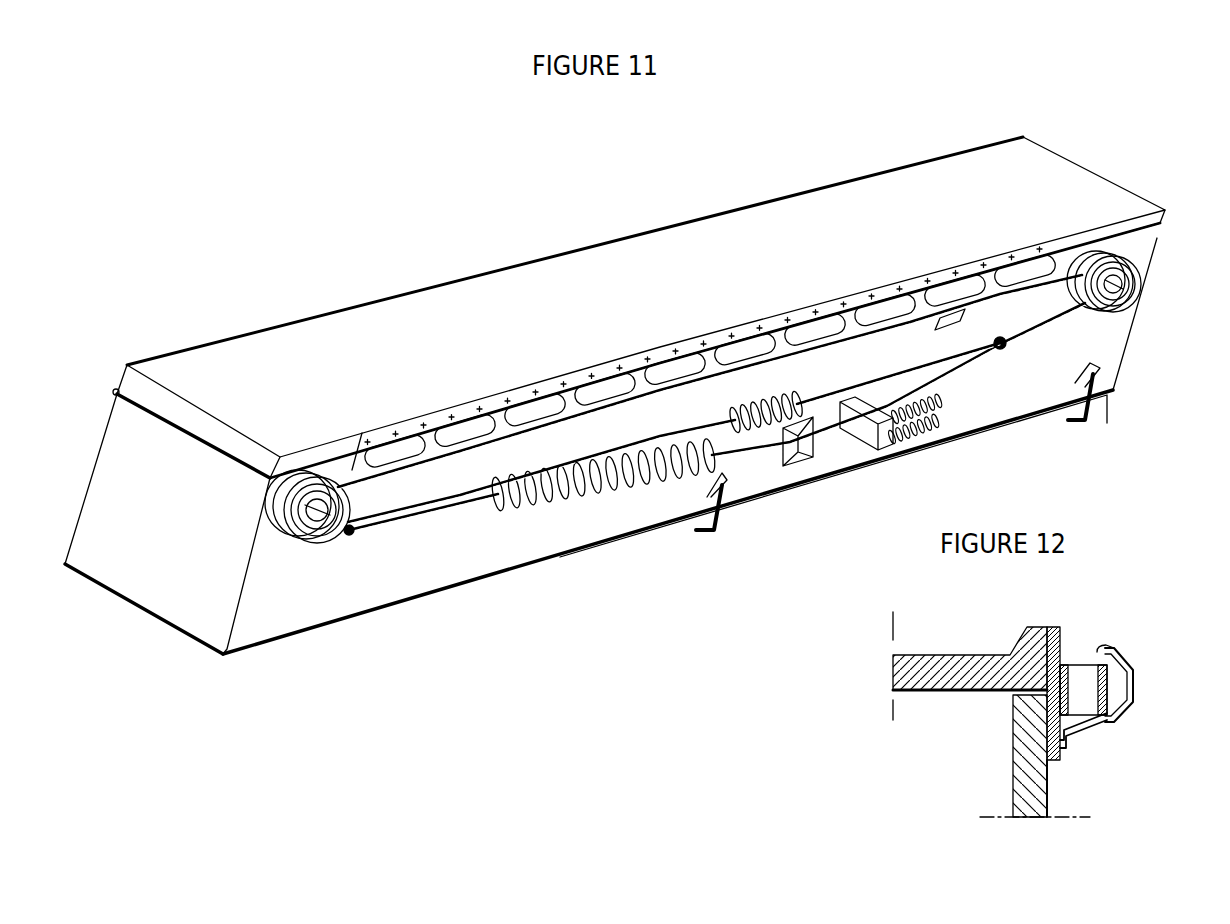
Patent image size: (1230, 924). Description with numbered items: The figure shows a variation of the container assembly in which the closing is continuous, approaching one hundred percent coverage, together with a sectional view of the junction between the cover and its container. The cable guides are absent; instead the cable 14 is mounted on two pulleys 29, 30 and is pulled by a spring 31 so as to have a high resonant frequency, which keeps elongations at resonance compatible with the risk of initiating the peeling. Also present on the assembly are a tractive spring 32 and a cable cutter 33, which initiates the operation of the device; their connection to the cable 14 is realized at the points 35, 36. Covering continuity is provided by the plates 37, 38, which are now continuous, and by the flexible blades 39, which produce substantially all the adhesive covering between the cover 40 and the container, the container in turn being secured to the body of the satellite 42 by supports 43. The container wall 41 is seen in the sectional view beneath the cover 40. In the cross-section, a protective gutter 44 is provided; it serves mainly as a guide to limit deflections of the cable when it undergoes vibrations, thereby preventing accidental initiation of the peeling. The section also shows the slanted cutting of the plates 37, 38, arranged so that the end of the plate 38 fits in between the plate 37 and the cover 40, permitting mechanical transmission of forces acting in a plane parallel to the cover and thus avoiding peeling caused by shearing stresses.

In FIG. 11, the cable 14 is at (1068, 272).
In FIG. 11, the pulley 29 is at (314, 524).
In FIG. 11, the pulley 30 is at (1128, 286).
In FIG. 11, the spring 31 is at (797, 405).
In FIG. 11, the tractive spring 32 is at (530, 516).
In FIG. 11, the cable cutter 33 is at (893, 447).
In FIG. 11, the connection point 35 is at (354, 534).
In FIG. 11, the connection point 36 is at (1003, 347).
In FIG. 11, the plate 37 is at (852, 300).
In FIG. 12, the plate 37 is at (1053, 630).
In FIG. 11, the plate 38 is at (950, 314).
In FIG. 12, the plate 38 is at (1057, 765).
In FIG. 11, the flexible blades 39 is at (385, 448).
In FIG. 11, the cover 40 is at (1030, 148).
In FIG. 12, the cover 40 is at (977, 668).
In FIG. 11, the housing wall 41 is at (1112, 340).
In FIG. 12, the housing wall 41 is at (1023, 787).
In FIG. 11, the body of the satellite 42 is at (597, 607).
In FIG. 11, the supports 43 is at (718, 530).
In FIG. 12, the protective gutter 44 is at (1127, 700).